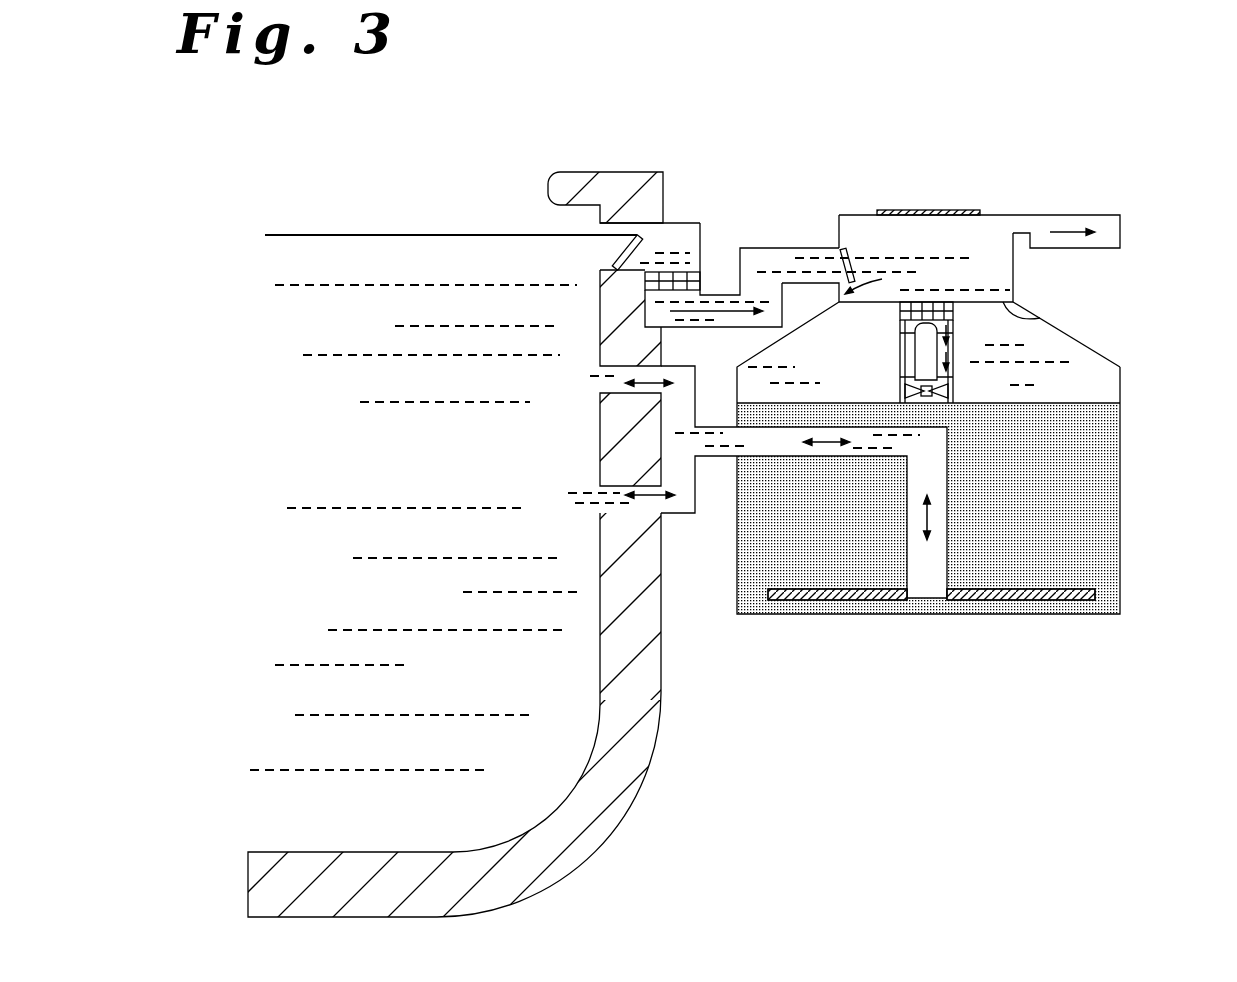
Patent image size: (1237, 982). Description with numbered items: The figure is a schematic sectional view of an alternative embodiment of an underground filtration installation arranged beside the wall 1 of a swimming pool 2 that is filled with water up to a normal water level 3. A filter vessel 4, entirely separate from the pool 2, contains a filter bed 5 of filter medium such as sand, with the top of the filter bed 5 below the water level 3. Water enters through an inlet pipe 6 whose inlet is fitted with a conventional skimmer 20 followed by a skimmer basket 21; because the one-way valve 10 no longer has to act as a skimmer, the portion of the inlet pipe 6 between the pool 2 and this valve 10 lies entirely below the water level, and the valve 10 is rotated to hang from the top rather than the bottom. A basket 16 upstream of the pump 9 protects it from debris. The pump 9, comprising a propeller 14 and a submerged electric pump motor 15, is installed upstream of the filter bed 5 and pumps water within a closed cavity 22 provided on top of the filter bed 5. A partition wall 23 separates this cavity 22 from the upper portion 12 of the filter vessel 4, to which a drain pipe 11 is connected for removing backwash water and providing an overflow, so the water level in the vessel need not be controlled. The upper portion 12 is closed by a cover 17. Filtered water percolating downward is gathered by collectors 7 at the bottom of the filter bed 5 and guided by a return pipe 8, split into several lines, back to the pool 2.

The wall 1 is at (632, 704).
The swimming pool 2 is at (431, 473).
The normal water level 3 is at (425, 234).
The filter vessel 4 is at (1142, 392).
The filter bed 5 is at (1096, 497).
The inlet pipe 6 is at (770, 250).
The collectors 7 is at (1011, 600).
The return pipe 8 is at (712, 427).
The pump 9 is at (943, 350).
The one-way valve 10 is at (850, 258).
The drain pipe 11 is at (1100, 215).
The upper portion 12 is at (1016, 271).
The propeller 14 is at (950, 393).
The electric pump motor 15 is at (925, 356).
The basket 16 is at (945, 302).
The cover 17 is at (943, 211).
The skimmer 20 is at (615, 266).
The skimmer basket 21 is at (688, 290).
The closed cavity 22 is at (1075, 346).
The partition wall 23 is at (1040, 320).